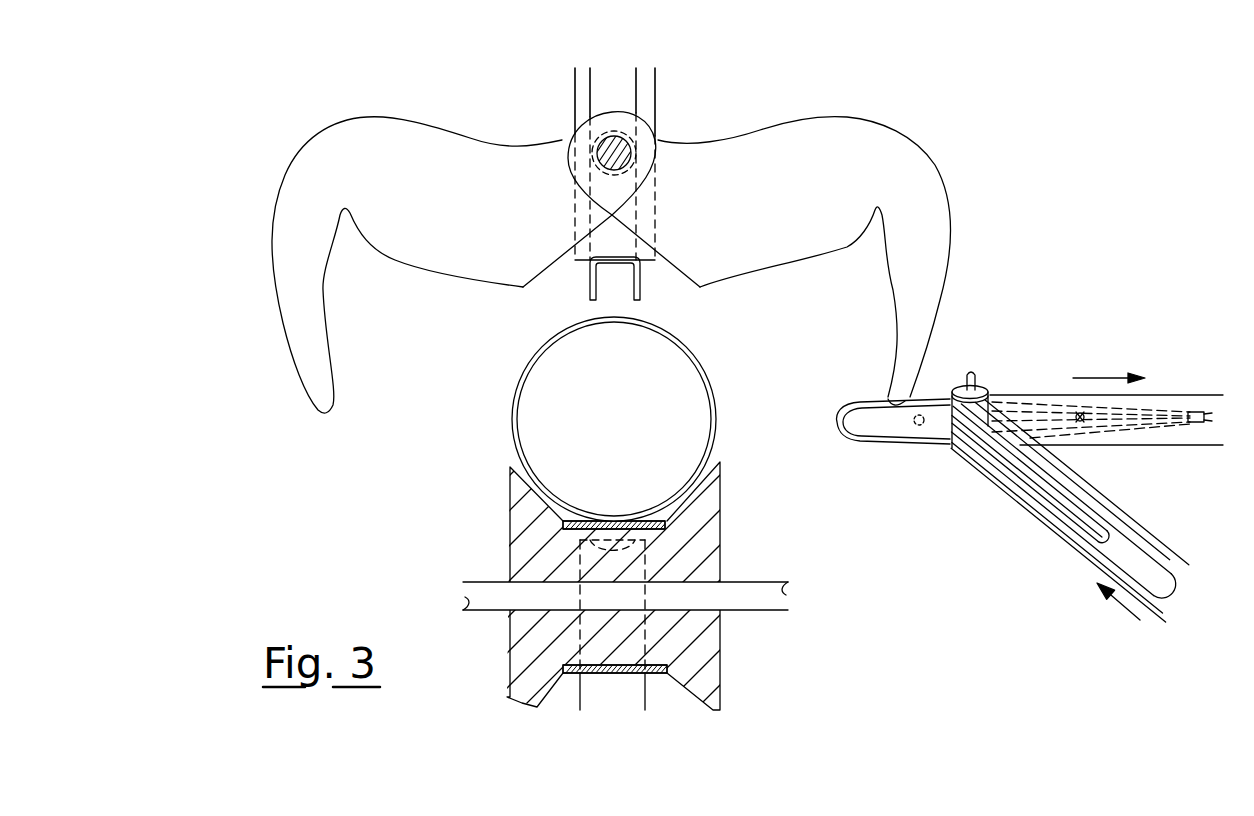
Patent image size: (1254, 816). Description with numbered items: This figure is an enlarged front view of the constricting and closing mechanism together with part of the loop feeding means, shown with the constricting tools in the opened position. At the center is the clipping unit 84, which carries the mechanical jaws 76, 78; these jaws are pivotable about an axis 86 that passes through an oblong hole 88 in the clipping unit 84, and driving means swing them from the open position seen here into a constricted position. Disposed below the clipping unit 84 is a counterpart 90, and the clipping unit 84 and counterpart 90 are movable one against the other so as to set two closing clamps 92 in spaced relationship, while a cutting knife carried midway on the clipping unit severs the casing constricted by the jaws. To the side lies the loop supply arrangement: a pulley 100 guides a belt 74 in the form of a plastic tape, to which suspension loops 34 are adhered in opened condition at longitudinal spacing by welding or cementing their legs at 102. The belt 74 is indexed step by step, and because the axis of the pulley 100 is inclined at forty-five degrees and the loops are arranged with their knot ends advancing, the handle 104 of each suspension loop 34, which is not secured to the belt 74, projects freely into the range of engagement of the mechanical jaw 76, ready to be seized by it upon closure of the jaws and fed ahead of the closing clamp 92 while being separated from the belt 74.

The suspension loop 34 is at (824, 422).
The belt 74 is at (1173, 447).
The mechanical jaw 76 is at (950, 213).
The mechanical jaw 78 is at (284, 209).
The clipping unit 84 is at (643, 253).
The axis 86 is at (631, 156).
The oblong hole 88 is at (636, 93).
The counterpart 90 is at (662, 551).
The closing clamp 92 is at (590, 289).
The pulley 100 is at (986, 388).
The welding or cementing point 102 is at (990, 469).
The handle 104 is at (880, 443).